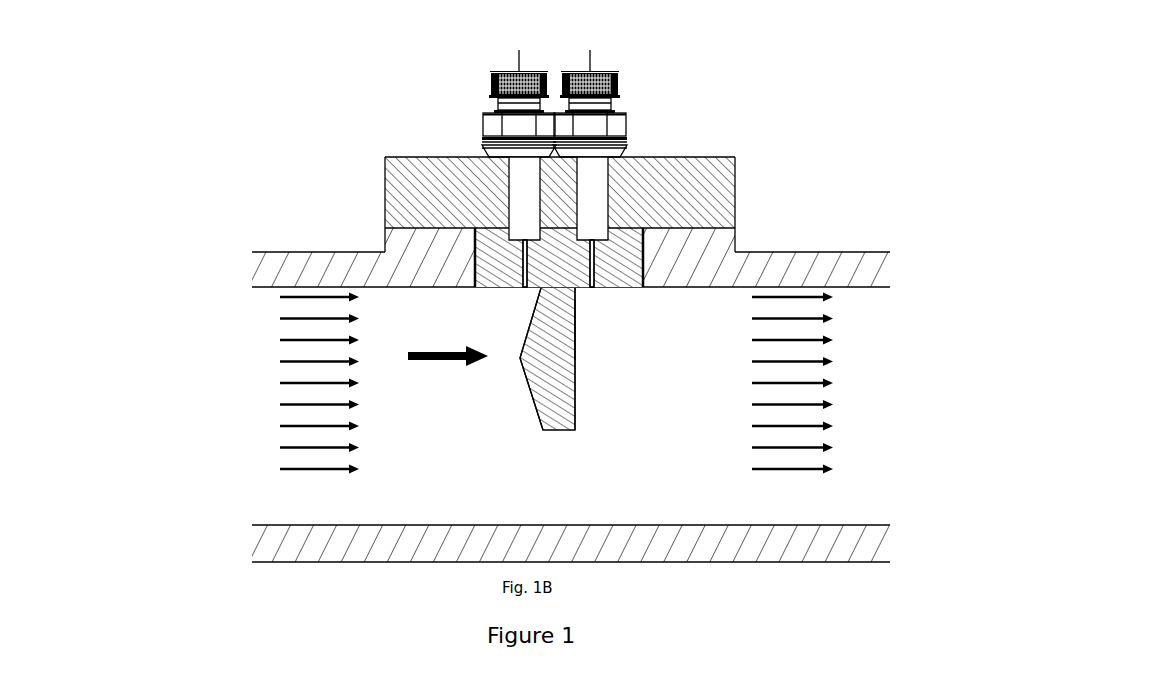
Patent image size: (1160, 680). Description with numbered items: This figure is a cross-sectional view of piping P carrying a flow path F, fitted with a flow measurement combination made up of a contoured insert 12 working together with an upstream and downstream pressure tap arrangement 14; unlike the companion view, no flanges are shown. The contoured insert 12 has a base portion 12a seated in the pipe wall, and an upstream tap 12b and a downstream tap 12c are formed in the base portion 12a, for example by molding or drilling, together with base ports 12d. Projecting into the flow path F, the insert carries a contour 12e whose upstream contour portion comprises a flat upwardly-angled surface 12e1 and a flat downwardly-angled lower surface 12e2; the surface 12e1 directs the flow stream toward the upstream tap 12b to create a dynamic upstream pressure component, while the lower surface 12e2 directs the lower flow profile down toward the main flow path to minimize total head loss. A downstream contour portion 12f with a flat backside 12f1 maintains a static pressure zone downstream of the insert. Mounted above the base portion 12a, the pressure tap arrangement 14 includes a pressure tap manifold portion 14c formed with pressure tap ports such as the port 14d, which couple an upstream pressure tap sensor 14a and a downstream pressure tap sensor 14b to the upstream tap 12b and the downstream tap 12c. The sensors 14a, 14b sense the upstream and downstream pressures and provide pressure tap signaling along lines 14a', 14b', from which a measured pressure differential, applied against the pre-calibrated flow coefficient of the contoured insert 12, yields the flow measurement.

The upstream and downstream pressure tap arrangement 14 is at (527, 147).
The upstream pressure tap sensor 14a is at (502, 96).
The upstream pressure tap signaling line 14a' is at (531, 50).
The downstream pressure tap sensor 14b is at (620, 91).
The downstream pressure tap signaling line 14b' is at (611, 48).
The pressure tap manifold portion 14c is at (641, 157).
The pressure tap port 14d is at (509, 185).
The contoured insert 12 is at (478, 350).
The base portion 12a is at (474, 229).
The upstream tap 12b is at (505, 250).
The downstream tap 12c is at (610, 246).
The base ports 12d is at (602, 226).
The contour 12e is at (536, 386).
The flat upwardly-angled surface 12e1 is at (533, 319).
The flat downwardly-angled lower surface 12e2 is at (531, 362).
The downstream contour portion 12f is at (582, 370).
The flat backside 12f1 is at (574, 339).
The flow path F is at (795, 492).
The piping P is at (790, 562).